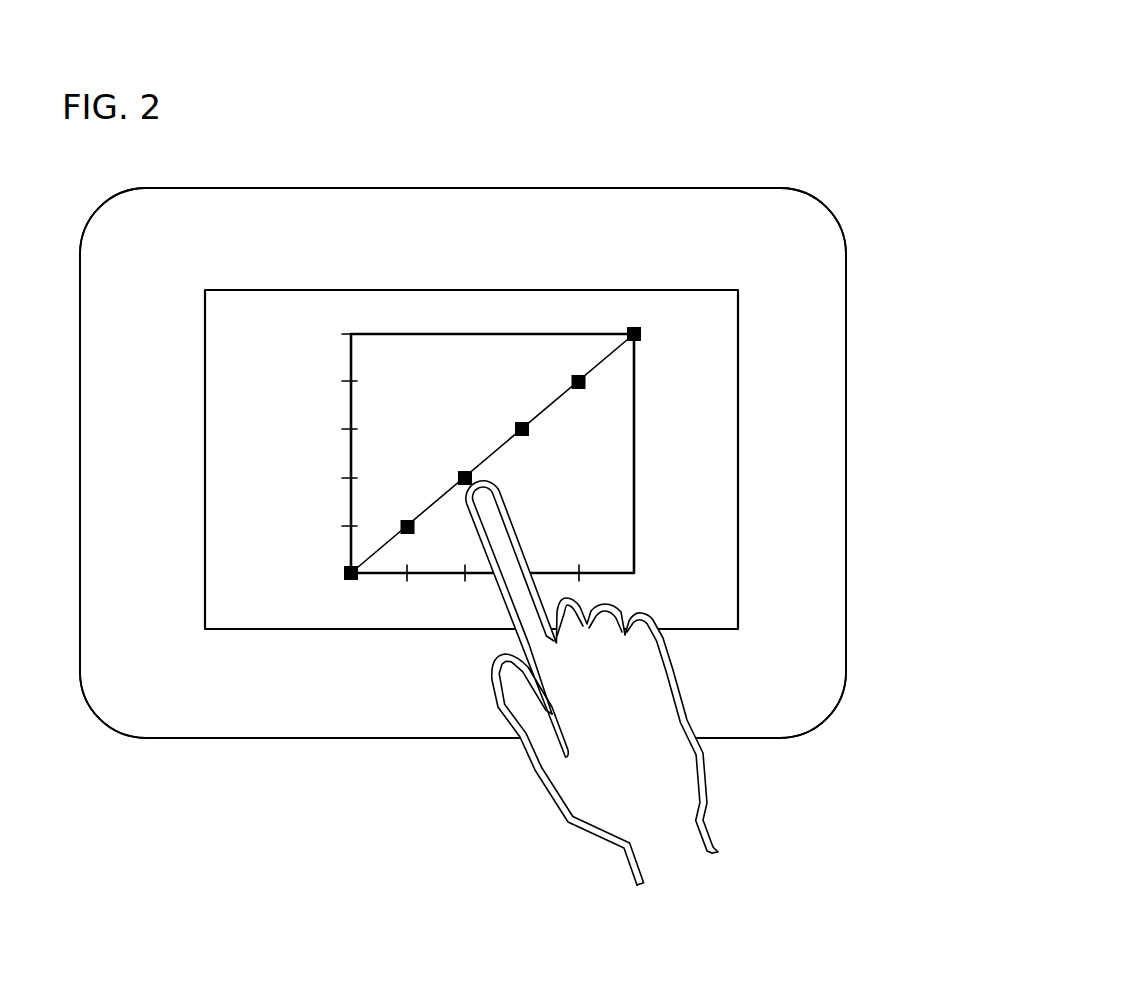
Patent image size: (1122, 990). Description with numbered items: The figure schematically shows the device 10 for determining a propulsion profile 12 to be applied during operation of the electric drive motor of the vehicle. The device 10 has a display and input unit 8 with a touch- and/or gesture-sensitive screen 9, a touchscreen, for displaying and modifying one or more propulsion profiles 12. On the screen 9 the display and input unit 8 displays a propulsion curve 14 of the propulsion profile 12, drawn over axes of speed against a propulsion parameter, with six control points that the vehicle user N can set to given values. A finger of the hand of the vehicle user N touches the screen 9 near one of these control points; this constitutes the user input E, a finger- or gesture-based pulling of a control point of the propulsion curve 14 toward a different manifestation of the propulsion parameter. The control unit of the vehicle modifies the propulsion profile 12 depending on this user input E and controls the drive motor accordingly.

The device 10 is at (841, 144).
The display and input unit 8 is at (866, 353).
The touch- and/or gesture-sensitive screen 9 is at (622, 289).
The propulsion profile 12 is at (620, 478).
The propulsion curve 14 is at (555, 387).
The user input E is at (533, 522).
The vehicle user N is at (726, 797).